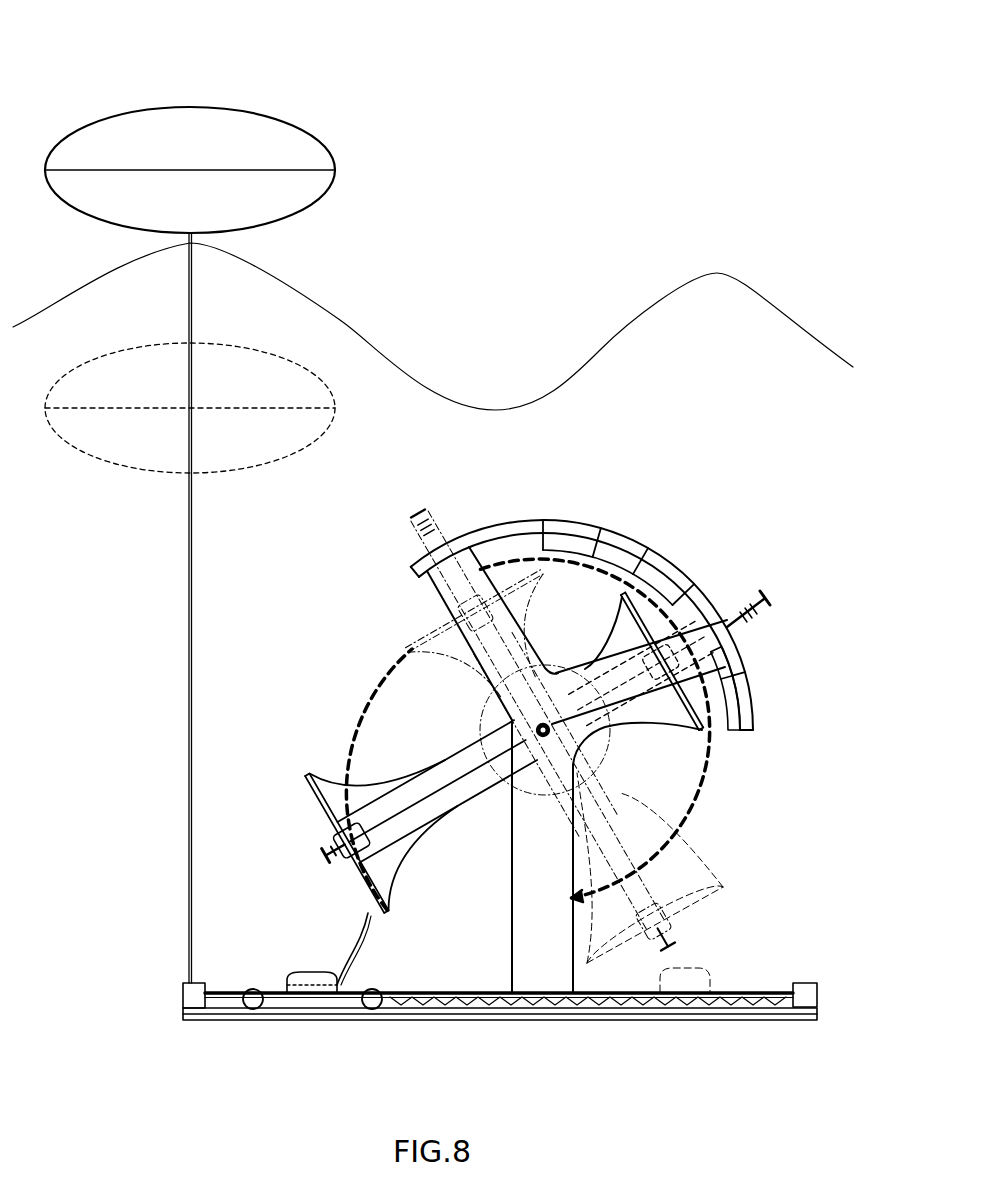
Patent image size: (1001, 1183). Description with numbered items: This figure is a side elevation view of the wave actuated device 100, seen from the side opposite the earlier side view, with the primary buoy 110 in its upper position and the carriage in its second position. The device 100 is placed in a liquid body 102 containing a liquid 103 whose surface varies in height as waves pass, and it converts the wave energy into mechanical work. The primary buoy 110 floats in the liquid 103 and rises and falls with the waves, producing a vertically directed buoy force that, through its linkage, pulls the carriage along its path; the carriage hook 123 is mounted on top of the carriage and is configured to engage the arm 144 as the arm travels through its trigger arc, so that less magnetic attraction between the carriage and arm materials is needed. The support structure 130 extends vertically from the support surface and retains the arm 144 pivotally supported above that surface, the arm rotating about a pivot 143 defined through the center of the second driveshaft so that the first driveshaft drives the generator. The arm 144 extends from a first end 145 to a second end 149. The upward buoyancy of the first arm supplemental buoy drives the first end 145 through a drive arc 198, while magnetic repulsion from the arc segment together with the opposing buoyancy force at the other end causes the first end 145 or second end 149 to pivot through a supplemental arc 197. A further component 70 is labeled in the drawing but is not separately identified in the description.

The wave actuated device 100 is at (66, 56).
The primary buoy 110 is at (190, 107).
The liquid body 102 is at (642, 318).
The liquid 103 is at (388, 372).
The supplemental arc 197 is at (593, 569).
The drive arc 198 is at (368, 710).
The turbine arm 70 is at (480, 737).
The first end 145 is at (295, 783).
The pivot 143 is at (555, 733).
The second end 149 is at (681, 745).
The arm 144 is at (285, 835).
The support structure 130 is at (498, 894).
The carriage hook 123 is at (373, 928).